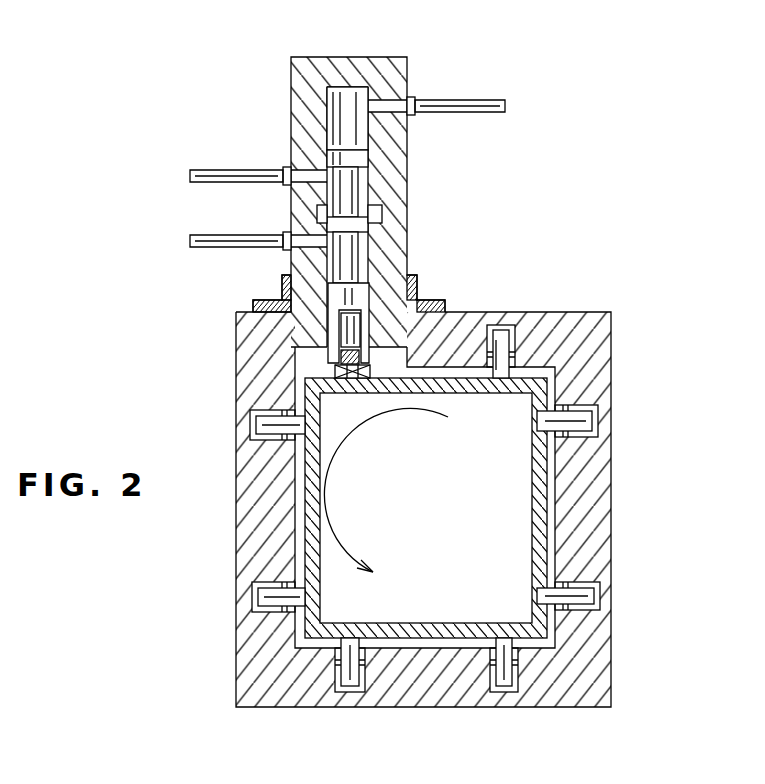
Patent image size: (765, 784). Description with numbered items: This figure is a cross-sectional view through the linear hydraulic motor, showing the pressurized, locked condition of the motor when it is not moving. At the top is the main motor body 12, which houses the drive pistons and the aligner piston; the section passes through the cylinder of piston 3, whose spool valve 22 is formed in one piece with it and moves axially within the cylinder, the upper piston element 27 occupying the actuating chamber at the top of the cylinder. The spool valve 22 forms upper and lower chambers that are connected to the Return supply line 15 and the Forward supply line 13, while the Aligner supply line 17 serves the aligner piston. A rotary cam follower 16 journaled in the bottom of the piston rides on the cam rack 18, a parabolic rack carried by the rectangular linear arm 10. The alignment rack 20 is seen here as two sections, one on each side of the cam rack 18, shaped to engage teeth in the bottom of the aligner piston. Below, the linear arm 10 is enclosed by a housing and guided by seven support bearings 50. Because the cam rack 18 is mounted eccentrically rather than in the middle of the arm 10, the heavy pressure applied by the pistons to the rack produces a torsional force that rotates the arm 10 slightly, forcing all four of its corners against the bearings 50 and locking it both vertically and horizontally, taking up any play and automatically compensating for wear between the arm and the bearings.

The primary actuating piston 3 is at (334, 302).
The linear arm 10 is at (532, 500).
The main motor body 12 is at (296, 83).
The Forward supply line 13 is at (240, 170).
The Return supply line 15 is at (240, 235).
The rotary cam follower 16 is at (350, 325).
The Aligner supply line 17 is at (466, 100).
The cam rack 18 is at (342, 372).
The alignment rack 20 is at (366, 376).
The spool valve 22 is at (352, 190).
The piston 27 is at (356, 95).
The support bearings 50 is at (502, 335).